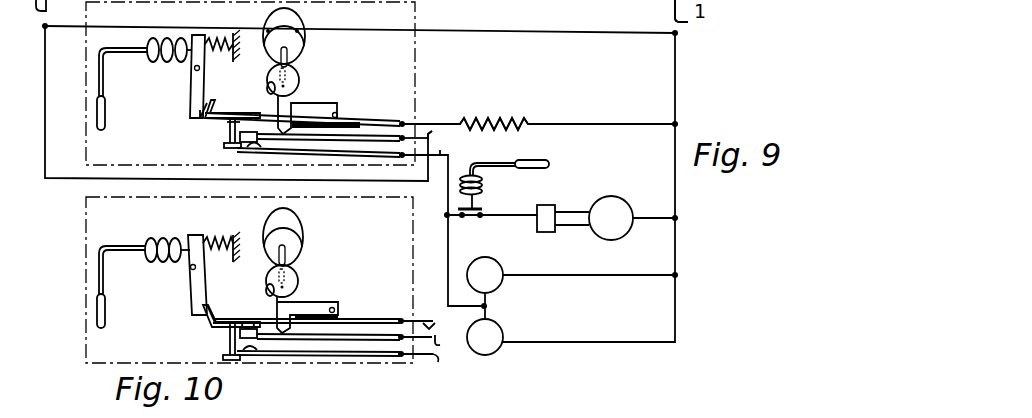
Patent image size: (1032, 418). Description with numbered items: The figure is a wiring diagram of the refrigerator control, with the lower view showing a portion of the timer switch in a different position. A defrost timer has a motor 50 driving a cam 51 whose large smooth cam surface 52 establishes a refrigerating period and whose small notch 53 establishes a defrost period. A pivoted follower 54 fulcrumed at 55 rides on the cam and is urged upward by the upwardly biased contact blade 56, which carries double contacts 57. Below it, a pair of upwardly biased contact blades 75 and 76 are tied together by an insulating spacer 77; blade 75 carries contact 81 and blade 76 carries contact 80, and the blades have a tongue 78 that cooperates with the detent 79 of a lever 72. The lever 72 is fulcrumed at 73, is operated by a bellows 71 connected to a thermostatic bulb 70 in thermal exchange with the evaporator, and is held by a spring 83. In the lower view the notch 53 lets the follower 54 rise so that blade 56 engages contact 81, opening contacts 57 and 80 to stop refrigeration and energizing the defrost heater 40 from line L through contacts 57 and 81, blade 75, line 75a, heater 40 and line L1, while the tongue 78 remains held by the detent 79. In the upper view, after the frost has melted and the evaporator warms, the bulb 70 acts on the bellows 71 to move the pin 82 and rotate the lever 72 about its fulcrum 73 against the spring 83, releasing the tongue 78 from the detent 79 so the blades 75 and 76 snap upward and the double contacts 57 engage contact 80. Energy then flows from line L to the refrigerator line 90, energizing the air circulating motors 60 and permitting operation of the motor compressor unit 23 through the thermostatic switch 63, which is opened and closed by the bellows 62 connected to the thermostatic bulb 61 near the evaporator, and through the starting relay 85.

In FIG. 9, the motor compressor unit 23 is at (617, 203).
In FIG. 9, the serpentine electric heater 40 is at (505, 123).
In FIG. 9, the motor 50 is at (292, 22).
In FIG. 10, the motor 50 is at (292, 223).
In FIG. 9, the cam 51 is at (292, 77).
In FIG. 10, the cam 51 is at (267, 273).
In FIG. 9, the smooth cam surface 52 is at (298, 92).
In FIG. 10, the smooth cam surface 52 is at (298, 267).
In FIG. 9, the notch 53 is at (268, 83).
In FIG. 10, the notch 53 is at (267, 294).
In FIG. 9, the pivoted follower 54 is at (298, 110).
In FIG. 10, the pivoted follower 54 is at (295, 311).
In FIG. 9, the fulcrum 55 is at (340, 110).
In FIG. 10, the fulcrum 55 is at (334, 307).
In FIG. 9, the contact blade 56 is at (353, 135).
In FIG. 10, the contact blade 56 is at (348, 333).
In FIG. 9, the double contacts 57 is at (240, 136).
In FIG. 10, the double contacts 57 is at (257, 336).
In FIG. 9, the motors 60 is at (490, 270).
In FIG. 9, the thermostatic bulb 61 is at (549, 170).
In FIG. 9, the bellows 62 is at (483, 187).
In FIG. 9, the thermostatic switch 63 is at (483, 208).
In FIG. 9, the thermostatic bulb 70 is at (105, 122).
In FIG. 10, the thermostatic bulb 70 is at (105, 313).
In FIG. 9, the bellows 71 is at (152, 37).
In FIG. 10, the bellows 71 is at (163, 262).
In FIG. 9, the lever 72 is at (188, 92).
In FIG. 10, the lever 72 is at (190, 303).
In FIG. 9, the fulcrum 73 is at (200, 68).
In FIG. 10, the fulcrum 73 is at (196, 267).
In FIG. 9, the contact blade 75 is at (390, 118).
In FIG. 10, the contact blade 75 is at (380, 317).
In FIG. 9, the line 75a is at (430, 120).
In FIG. 10, the line 75a is at (425, 326).
In FIG. 9, the contact blade 76 is at (345, 158).
In FIG. 10, the contact blade 76 is at (350, 358).
In FIG. 9, the insulating spacer 77 is at (228, 142).
In FIG. 10, the insulating spacer 77 is at (229, 343).
In FIG. 9, the tongue 78 is at (217, 110).
In FIG. 10, the tongue 78 is at (210, 313).
In FIG. 9, the detent 79 is at (207, 103).
In FIG. 10, the detent 79 is at (204, 297).
In FIG. 9, the contact 80 is at (252, 148).
In FIG. 10, the contact 80 is at (251, 354).
In FIG. 9, the contact 81 is at (228, 122).
In FIG. 10, the contact 81 is at (241, 324).
In FIG. 9, the pin 82 is at (193, 34).
In FIG. 10, the pin 82 is at (177, 245).
In FIG. 9, the spring 83 is at (222, 34).
In FIG. 10, the spring 83 is at (213, 243).
In FIG. 9, the starting relay 85 is at (550, 207).
In FIG. 9, the refrigerator line 90 is at (445, 185).
In FIG. 10, the refrigerator line 90 is at (421, 355).
In FIG. 9, the line L is at (432, 147).
In FIG. 9, the line L1 is at (690, 11).